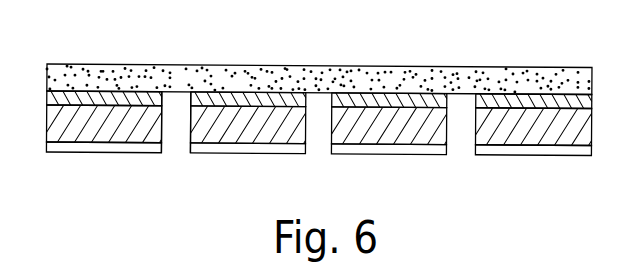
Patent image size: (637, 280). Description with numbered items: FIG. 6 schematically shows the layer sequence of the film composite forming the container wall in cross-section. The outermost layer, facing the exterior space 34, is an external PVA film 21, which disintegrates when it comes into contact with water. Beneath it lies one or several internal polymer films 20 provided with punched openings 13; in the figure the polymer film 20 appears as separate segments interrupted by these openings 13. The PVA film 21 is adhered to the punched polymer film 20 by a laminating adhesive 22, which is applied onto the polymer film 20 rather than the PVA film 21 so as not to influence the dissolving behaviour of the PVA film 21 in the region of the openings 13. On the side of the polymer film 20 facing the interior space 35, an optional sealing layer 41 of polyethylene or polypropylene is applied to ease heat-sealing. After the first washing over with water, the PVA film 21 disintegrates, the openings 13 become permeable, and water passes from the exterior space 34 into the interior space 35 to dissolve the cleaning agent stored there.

The PVA film 21 is at (262, 74).
The laminating adhesive 22 is at (414, 99).
The polymer film 20 is at (257, 136).
The sealing layer 41 is at (393, 148).
The punched openings 13 is at (177, 138).
The exterior space 34 is at (563, 50).
The interior space 35 is at (563, 190).